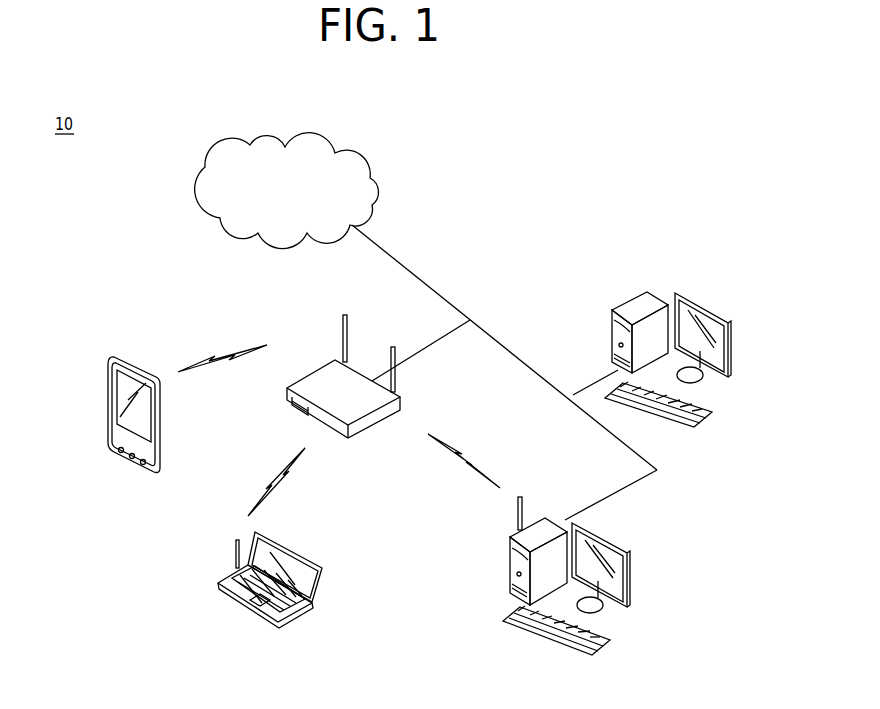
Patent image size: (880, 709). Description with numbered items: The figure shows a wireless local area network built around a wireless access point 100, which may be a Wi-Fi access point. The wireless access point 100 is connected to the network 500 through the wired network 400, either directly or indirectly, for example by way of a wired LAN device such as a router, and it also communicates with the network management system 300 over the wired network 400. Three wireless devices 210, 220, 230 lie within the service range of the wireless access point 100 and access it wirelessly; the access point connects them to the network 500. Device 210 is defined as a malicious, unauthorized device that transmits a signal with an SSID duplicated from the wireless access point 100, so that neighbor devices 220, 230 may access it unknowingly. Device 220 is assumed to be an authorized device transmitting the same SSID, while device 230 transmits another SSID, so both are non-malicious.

The wireless access point 100 is at (400, 400).
The device 210 is at (508, 572).
The device 220 is at (108, 403).
The device 230 is at (317, 583).
The network management system 300 is at (657, 292).
The wired network 400 is at (433, 287).
The network 500 is at (337, 137).